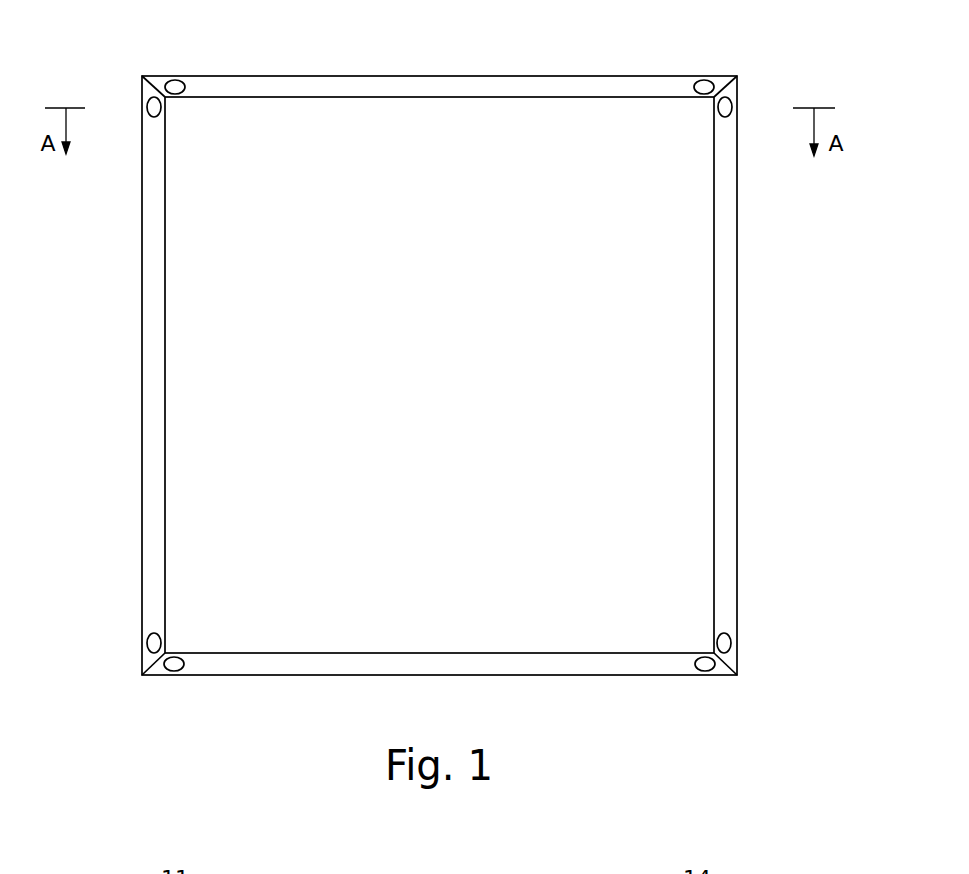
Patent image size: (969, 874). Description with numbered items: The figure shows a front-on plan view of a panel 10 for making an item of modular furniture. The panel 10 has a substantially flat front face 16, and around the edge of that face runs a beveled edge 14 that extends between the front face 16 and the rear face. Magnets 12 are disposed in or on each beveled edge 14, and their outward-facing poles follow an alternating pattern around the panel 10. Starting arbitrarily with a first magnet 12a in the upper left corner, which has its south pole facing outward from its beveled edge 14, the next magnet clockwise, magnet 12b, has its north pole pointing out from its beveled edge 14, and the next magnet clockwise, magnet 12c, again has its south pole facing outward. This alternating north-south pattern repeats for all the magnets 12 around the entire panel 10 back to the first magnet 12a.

The panel 10 is at (796, 278).
The magnets 12 is at (492, 340).
The first magnet 12a is at (178, 87).
The second magnet 12b is at (705, 87).
The third magnet 12c is at (732, 112).
The beveled edge 14 is at (727, 377).
The front face 16 is at (672, 523).